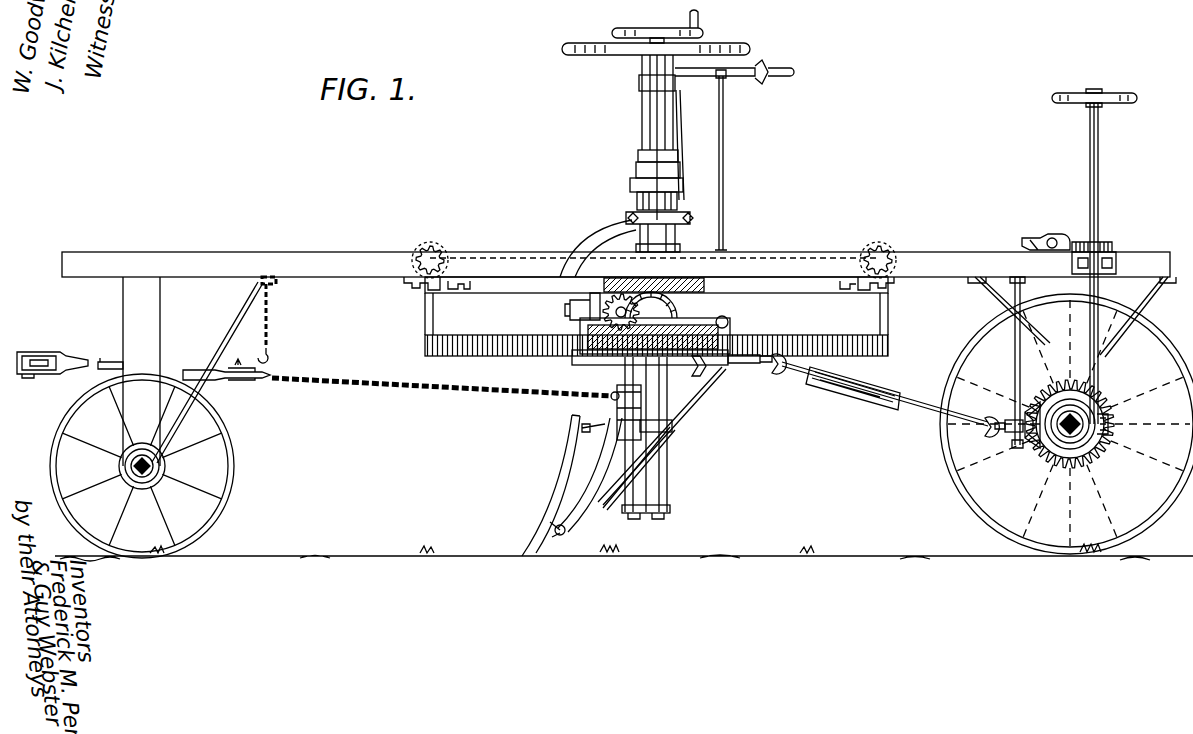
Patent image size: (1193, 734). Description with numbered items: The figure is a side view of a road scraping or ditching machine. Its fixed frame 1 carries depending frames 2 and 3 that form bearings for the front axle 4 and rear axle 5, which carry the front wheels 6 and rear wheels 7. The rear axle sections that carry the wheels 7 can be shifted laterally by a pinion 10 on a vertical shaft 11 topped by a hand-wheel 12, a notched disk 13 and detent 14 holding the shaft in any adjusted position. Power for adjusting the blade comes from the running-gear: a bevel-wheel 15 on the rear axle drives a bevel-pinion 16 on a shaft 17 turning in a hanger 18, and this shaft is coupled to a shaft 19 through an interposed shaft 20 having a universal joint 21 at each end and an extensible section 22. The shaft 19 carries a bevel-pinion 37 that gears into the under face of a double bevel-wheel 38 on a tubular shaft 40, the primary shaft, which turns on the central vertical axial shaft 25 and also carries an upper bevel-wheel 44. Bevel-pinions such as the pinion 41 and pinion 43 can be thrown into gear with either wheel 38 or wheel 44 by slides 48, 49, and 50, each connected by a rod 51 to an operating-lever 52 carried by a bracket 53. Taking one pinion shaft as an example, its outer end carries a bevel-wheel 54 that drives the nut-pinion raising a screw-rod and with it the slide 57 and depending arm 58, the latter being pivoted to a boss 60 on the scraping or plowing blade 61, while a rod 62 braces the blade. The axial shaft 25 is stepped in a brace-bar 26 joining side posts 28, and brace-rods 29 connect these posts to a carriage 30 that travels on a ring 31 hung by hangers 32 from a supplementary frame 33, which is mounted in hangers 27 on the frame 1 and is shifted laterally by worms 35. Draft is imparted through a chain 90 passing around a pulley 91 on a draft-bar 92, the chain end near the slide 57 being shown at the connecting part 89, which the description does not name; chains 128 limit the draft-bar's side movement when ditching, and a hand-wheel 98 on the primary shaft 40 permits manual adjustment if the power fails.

The fixed frame 1 is at (616, 264).
The depending frame 2 is at (141, 371).
The depending frame 3 is at (1072, 317).
The front axle 4 is at (130, 470).
The rear axle 5 is at (1095, 424).
The front wheel 6 is at (147, 466).
The rear wheel 7 is at (1061, 424).
The pinion 10 is at (1108, 428).
The vertical shaft 11 is at (1104, 263).
The hand-wheel 12 is at (1094, 92).
The notched disk 13 is at (1104, 242).
The detent 14 is at (1046, 235).
The bevel-wheel 15 is at (1070, 430).
The bevel-pinion 16 is at (1030, 444).
The shaft 17 is at (1008, 432).
The hanger 18 is at (1011, 362).
The shaft 19 is at (750, 368).
The interposed shaft 20 is at (885, 394).
The universal joint 21 is at (883, 395).
The extensible section 22 is at (853, 388).
The central vertical axial shaft 25 is at (656, 34).
The brace-bar 26 is at (646, 445).
The hanger 27 is at (657, 291).
The side post 28 is at (639, 468).
The brace-rod 29 is at (662, 436).
The carriage 30 is at (602, 365).
The ring 31 is at (656, 338).
The hanger 32 is at (660, 314).
The supplementary frame 33 is at (656, 284).
The worm 35 is at (654, 253).
The bevel-pinion 37 is at (694, 368).
The double bevel-wheel 38 is at (724, 316).
The tubular shaft 40 is at (652, 137).
The bevel-pinion 41 is at (656, 305).
The bevel-pinion 43 is at (602, 304).
The bevel-wheel 44 is at (704, 285).
The slide 48 is at (630, 185).
The slide 49 is at (680, 238).
The slide 50 is at (637, 205).
The rod 51 is at (688, 145).
The operating-lever 52 is at (734, 67).
The bracket 53 is at (731, 160).
The bevel-wheel 54 is at (700, 316).
The slide 57 is at (629, 412).
The depending arm 58 is at (590, 475).
The boss 60 is at (561, 536).
The scraping or plowing blade 61 is at (572, 466).
The rod 62 is at (656, 443).
The chain pin 89 is at (609, 390).
The chain 90 is at (442, 382).
The pulley 91 is at (233, 369).
The draft-bar 92 is at (70, 361).
The hand-wheel 98 is at (704, 19).
The chain 128 is at (277, 320).